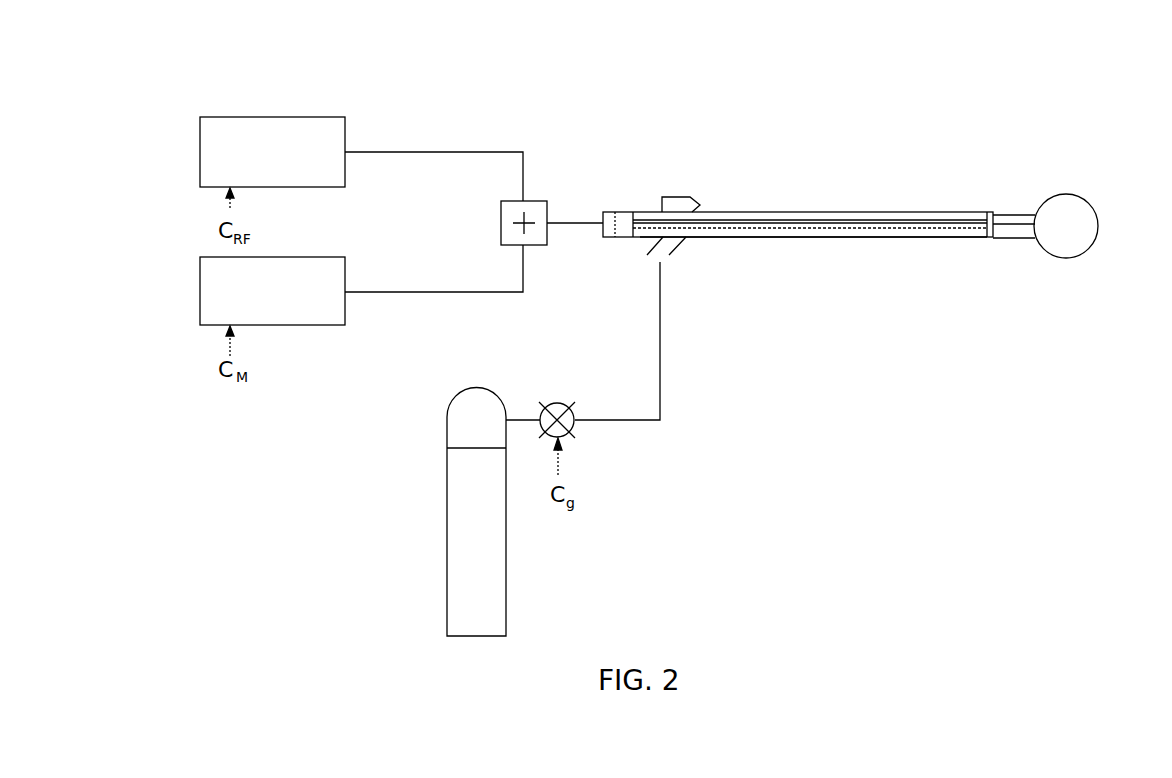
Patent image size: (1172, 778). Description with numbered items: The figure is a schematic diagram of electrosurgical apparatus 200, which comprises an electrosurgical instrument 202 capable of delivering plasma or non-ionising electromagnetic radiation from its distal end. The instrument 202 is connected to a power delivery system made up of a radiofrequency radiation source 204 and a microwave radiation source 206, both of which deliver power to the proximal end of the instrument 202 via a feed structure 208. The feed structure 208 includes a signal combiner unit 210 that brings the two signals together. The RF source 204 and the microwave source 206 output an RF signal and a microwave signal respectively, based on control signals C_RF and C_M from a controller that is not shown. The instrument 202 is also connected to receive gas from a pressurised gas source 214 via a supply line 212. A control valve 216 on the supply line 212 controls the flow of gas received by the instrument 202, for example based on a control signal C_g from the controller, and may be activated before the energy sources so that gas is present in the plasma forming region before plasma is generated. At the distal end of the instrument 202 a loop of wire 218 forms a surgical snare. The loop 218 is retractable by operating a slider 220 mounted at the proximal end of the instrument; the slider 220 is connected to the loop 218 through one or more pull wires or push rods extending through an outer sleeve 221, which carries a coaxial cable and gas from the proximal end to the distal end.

The electrosurgical apparatus 200 is at (988, 85).
The electrosurgical instrument 202 is at (832, 213).
The radiofrequency (RF) radiation source 204 is at (292, 117).
The microwave radiation source 206 is at (315, 326).
The feed structure 208 is at (612, 137).
The signal combiner unit 210 is at (501, 232).
The supply line 212 is at (662, 352).
The pressurised gas source 214 is at (457, 555).
The control valve 216 is at (575, 430).
The loop of wire 218 is at (1068, 258).
The slider 220 is at (686, 197).
The outer sleeve 221 is at (853, 238).